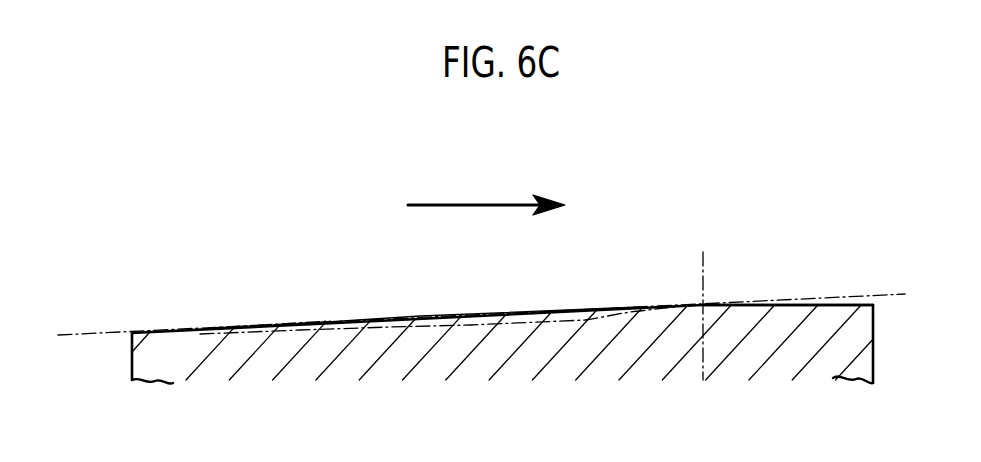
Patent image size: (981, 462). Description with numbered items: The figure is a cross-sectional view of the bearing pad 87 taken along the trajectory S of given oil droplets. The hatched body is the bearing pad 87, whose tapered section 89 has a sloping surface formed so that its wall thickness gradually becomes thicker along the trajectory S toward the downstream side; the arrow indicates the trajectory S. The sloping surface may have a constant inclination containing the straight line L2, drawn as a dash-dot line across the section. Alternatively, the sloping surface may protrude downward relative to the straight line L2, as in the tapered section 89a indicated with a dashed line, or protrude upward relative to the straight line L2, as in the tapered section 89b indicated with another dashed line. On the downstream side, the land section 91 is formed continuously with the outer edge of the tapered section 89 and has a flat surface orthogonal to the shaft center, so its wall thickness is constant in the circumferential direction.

The bearing pad 87 is at (598, 308).
The tapered section 89 is at (399, 316).
The tapered section (downward-protruding variant) 89a is at (457, 323).
The tapered section (upward-protruding variant) 89b is at (328, 318).
The land section 91 is at (790, 300).
The trajectory of oil droplets S is at (450, 204).
The straight line L2 is at (858, 295).